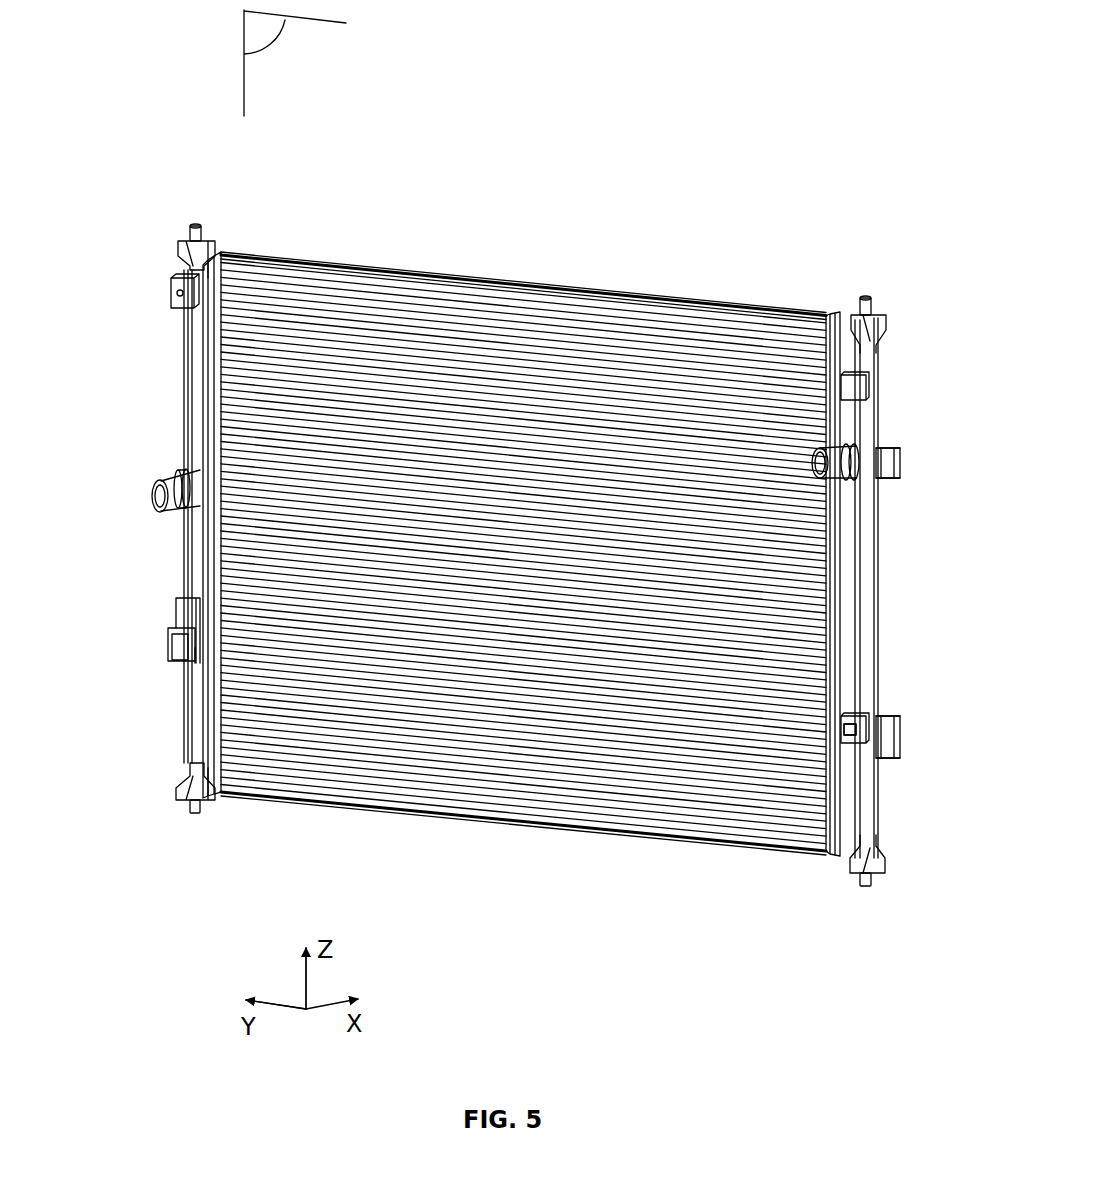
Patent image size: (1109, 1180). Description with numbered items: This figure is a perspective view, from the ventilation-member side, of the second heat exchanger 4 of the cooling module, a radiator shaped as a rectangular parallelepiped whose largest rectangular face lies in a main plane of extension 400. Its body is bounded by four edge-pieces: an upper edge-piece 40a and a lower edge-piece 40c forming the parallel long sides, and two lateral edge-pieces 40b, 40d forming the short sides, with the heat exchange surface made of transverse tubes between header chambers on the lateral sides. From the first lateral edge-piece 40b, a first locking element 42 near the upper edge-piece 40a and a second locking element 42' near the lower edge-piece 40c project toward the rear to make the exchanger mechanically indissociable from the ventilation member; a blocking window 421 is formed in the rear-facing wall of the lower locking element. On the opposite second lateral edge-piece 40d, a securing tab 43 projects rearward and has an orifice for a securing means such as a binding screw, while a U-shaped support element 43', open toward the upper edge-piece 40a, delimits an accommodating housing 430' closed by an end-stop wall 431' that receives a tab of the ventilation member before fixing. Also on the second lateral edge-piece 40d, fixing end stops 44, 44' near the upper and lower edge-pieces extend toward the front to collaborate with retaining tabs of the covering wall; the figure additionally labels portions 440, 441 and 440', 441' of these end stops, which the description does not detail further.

The second heat exchanger 4 is at (725, 257).
The main plane of extension 400 is at (262, 38).
The upper edge-piece 40a is at (525, 277).
The first lateral edge-piece 40b is at (862, 818).
The lower edge-piece 40c is at (517, 826).
The second lateral edge-piece 40d is at (172, 402).
The first locking element 42 is at (891, 383).
The second locking element 42' is at (892, 695).
The blocking window 421 is at (836, 722).
The securing tab 43 is at (145, 291).
The support element 43' is at (140, 644).
The accommodating housing 430' is at (138, 623).
The end-stop wall 431' is at (145, 680).
The fixing end stop 44 is at (924, 460).
The mounting bracket 44' is at (927, 737).
The upper portion of bracket 440 is at (932, 427).
The lower portion of bracket 441 is at (932, 495).
The upper portion of bracket 440' is at (935, 699).
The lower portion of bracket 441' is at (935, 773).